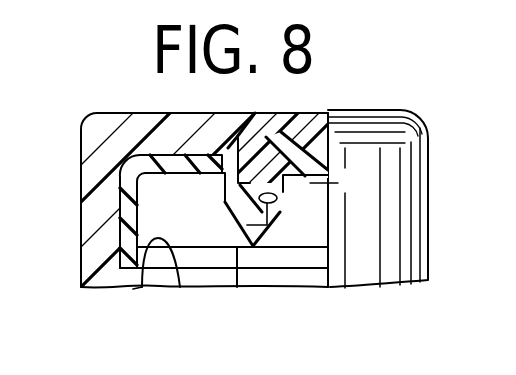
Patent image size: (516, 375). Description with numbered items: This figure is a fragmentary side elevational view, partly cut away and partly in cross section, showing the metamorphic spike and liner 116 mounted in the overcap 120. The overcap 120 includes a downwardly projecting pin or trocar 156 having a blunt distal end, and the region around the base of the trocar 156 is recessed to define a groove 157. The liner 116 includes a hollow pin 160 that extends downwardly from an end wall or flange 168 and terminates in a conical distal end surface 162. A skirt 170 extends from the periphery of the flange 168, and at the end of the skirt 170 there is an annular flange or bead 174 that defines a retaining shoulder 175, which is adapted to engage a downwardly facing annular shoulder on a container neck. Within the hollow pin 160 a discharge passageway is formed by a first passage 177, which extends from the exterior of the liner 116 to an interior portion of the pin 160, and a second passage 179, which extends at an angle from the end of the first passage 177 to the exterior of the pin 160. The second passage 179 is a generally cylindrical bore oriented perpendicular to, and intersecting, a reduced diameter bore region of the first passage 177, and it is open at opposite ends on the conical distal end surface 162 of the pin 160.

The metamorphic spike and liner 116 is at (346, 182).
The overcap 120 is at (413, 108).
The trocar 156 is at (250, 155).
The groove 157 is at (220, 150).
The hollow pin 160 is at (223, 181).
The conical distal end surface 162 is at (237, 287).
The flange 168 is at (163, 160).
The skirt 170 is at (127, 230).
The bead 174 is at (133, 289).
The retaining shoulder 175 is at (180, 287).
The first passage 177 is at (277, 199).
The second passage 179 is at (262, 224).